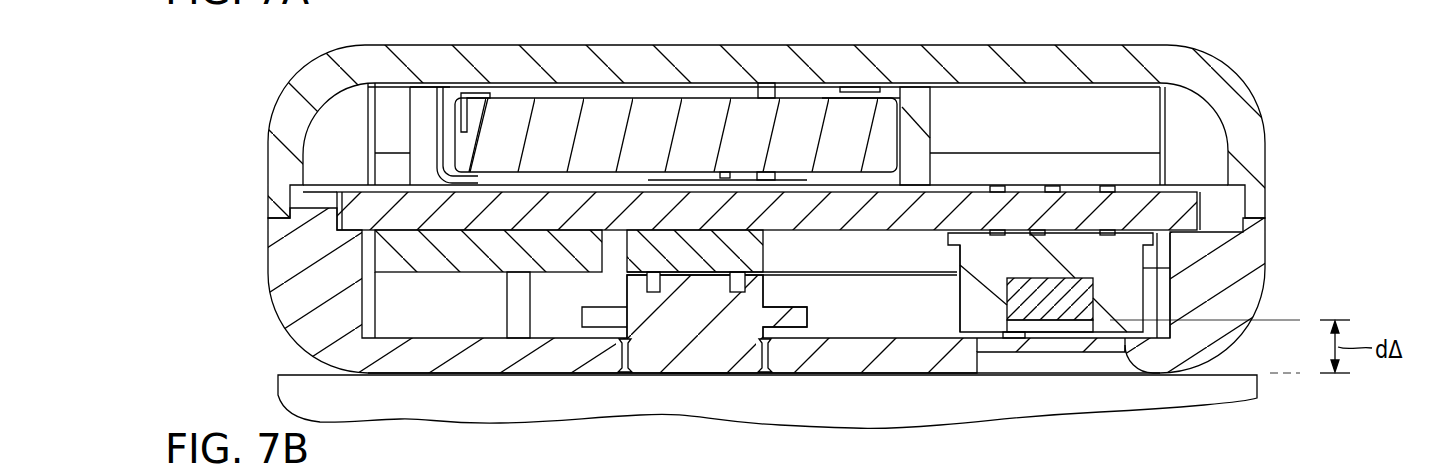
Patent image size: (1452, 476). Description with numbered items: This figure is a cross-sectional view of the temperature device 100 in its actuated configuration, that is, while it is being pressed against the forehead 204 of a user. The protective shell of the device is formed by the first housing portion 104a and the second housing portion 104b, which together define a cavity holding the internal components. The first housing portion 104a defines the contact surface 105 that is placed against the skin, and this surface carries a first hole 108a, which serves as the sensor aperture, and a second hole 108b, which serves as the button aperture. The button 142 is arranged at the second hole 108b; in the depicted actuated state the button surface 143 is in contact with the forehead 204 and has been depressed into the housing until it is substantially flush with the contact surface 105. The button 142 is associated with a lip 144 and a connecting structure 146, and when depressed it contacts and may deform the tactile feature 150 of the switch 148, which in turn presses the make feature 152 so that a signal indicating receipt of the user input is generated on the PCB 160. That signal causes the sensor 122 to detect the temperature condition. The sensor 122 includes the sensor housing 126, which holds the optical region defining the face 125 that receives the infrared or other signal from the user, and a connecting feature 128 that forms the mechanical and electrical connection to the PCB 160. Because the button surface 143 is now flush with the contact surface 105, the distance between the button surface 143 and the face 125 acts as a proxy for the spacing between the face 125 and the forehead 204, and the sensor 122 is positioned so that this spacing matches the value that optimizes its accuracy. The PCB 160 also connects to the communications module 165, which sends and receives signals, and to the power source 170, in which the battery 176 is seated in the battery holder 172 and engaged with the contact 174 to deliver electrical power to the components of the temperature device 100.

The temperature device 100 is at (1283, 40).
The first housing portion 104a is at (288, 326).
The second housing portion 104b is at (1237, 73).
The contact surface 105 is at (865, 374).
The first hole 108a is at (975, 362).
The second hole 108b is at (767, 355).
The sensor 122 is at (1150, 262).
The face 125 is at (1095, 292).
The sensor housing 126 is at (960, 312).
The connecting feature 128 is at (1108, 188).
The button 142 is at (645, 360).
The button surface 143 is at (697, 378).
The lip 144 is at (582, 318).
The connecting structure 146 is at (755, 302).
The switch 148 is at (627, 242).
The tactile feature 150 is at (733, 270).
The make feature 152 is at (765, 250).
The PCB 160 is at (1040, 200).
The communications module 165 is at (427, 253).
The power source 170 is at (423, 86).
The battery holder 172 is at (915, 95).
The contact 174 is at (768, 181).
The battery 176 is at (655, 120).
The forehead 204 is at (1262, 395).